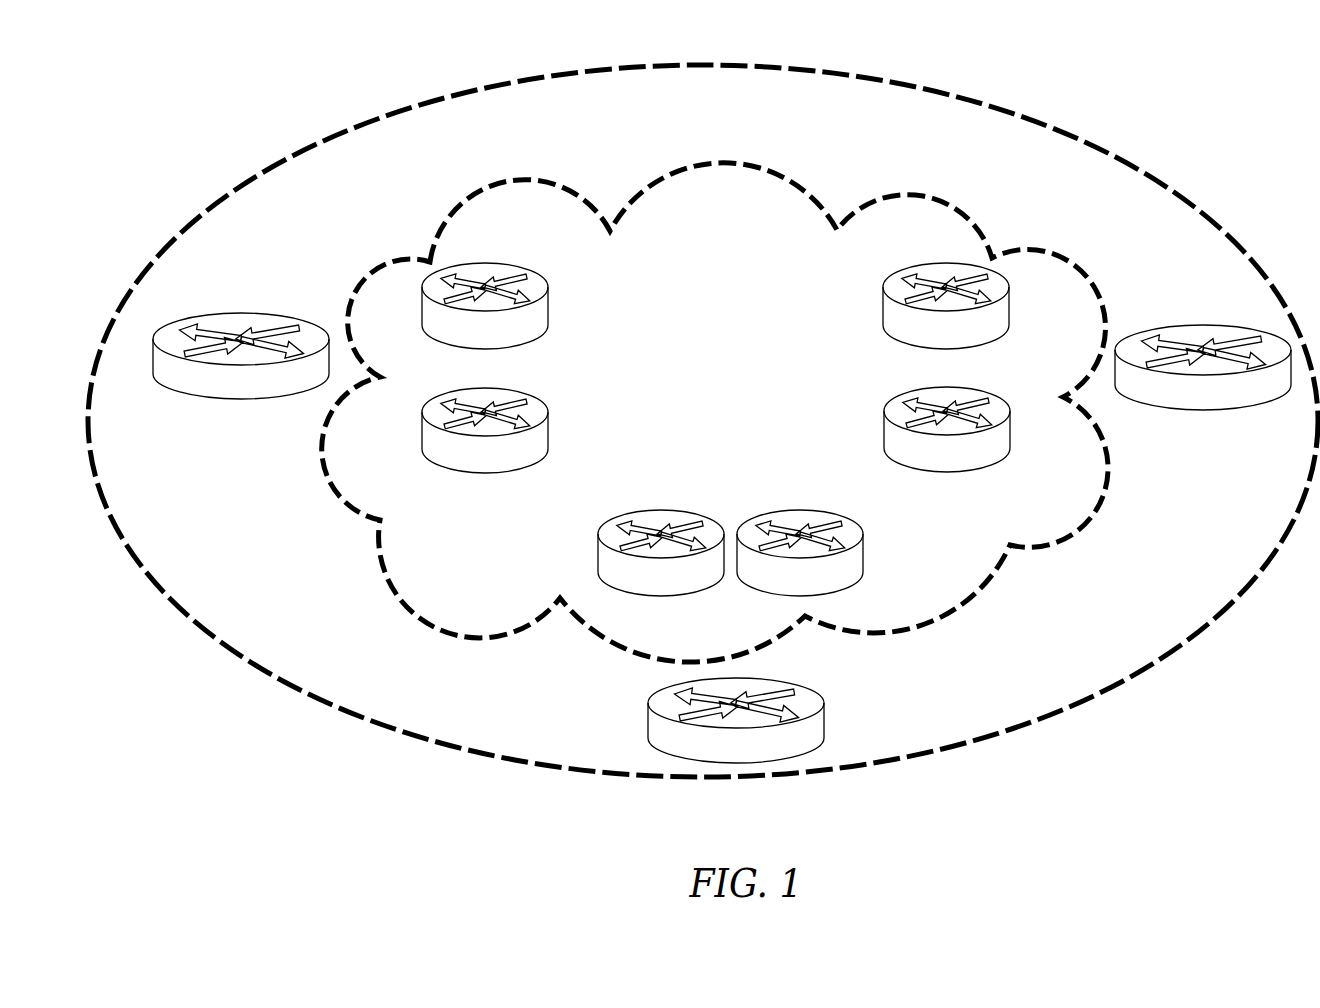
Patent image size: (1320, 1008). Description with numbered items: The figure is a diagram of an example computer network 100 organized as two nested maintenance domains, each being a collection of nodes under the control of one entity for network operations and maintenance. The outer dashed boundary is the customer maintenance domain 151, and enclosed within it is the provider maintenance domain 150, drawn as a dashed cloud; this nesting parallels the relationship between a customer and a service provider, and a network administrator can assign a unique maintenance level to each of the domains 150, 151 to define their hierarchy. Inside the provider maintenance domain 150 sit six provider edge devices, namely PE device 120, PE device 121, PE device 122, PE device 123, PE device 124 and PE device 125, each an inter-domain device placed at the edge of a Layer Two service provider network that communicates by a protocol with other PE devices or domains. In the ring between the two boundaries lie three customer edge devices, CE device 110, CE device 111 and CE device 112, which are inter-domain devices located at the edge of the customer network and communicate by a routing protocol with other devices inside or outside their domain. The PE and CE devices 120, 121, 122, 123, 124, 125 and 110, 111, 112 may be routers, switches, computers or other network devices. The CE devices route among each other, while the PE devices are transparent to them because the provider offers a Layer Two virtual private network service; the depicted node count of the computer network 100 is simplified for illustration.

The computer network 100 is at (1212, 99).
The customer edge device 110 is at (241, 356).
The customer edge device 111 is at (736, 720).
The customer edge device 112 is at (1203, 367).
The provider edge device 120 is at (485, 306).
The provider edge device 121 is at (485, 430).
The provider edge device 122 is at (661, 553).
The provider edge device 123 is at (800, 553).
The provider edge device 124 is at (947, 429).
The provider edge device 125 is at (946, 306).
The provider maintenance domain 150 is at (715, 412).
The customer maintenance domain 151 is at (703, 421).